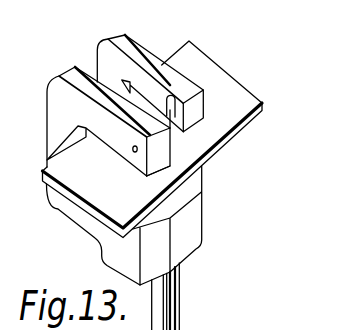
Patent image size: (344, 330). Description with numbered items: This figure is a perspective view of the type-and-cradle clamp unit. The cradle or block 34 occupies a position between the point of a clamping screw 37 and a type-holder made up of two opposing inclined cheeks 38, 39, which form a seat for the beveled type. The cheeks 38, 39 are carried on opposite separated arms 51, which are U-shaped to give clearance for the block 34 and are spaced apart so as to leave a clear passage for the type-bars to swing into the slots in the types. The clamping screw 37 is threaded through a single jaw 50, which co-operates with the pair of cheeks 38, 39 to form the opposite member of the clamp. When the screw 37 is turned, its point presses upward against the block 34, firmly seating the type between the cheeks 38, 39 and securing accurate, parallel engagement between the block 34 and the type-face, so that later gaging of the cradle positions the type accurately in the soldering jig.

The cradle or block 34 is at (153, 139).
The arms 51 is at (125, 105).
The inclined cheek 38 is at (153, 152).
The inclined cheek 39 is at (204, 105).
The jaw 50 is at (202, 230).
The clamping screw 37 is at (180, 294).